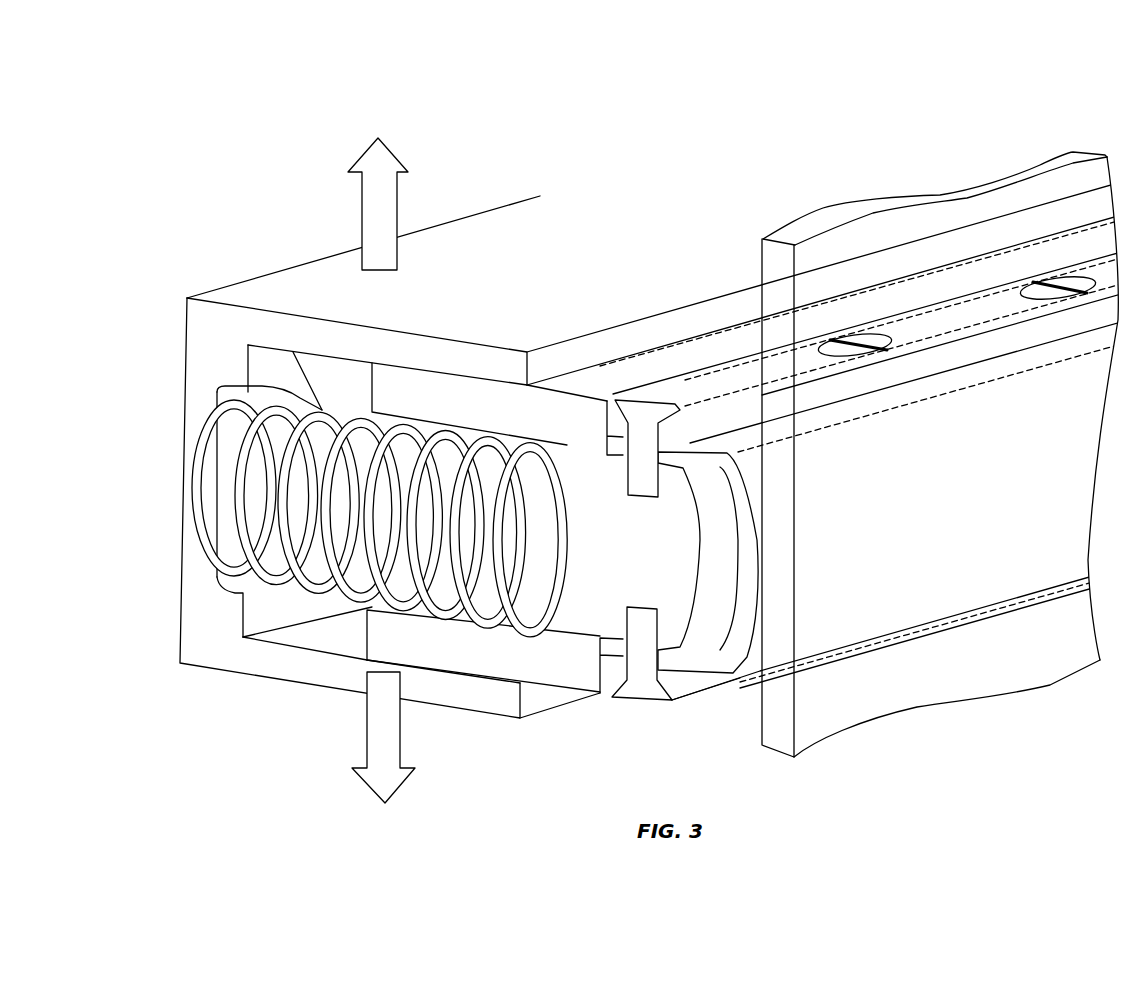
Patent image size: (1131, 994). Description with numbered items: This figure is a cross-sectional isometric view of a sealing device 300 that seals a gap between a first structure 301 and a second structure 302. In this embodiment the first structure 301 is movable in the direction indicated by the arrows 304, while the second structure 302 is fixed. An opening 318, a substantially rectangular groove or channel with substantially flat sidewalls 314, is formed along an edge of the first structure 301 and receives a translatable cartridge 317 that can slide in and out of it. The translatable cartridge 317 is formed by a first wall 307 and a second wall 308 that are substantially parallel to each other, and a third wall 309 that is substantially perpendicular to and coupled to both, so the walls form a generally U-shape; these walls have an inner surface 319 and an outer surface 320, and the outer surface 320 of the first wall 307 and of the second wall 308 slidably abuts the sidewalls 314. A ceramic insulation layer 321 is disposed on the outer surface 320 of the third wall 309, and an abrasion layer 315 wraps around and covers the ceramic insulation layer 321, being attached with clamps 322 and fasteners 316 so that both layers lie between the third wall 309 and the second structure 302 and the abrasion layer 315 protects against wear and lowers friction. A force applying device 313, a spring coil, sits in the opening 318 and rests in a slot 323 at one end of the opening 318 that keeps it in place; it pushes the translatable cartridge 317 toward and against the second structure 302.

The sealing device 300 is at (984, 86).
The first structure 301 is at (316, 276).
The second structure 302 is at (948, 677).
The arrows 304 is at (377, 158).
The first wall 307 is at (455, 395).
The second wall 308 is at (508, 665).
The third wall 309 is at (593, 587).
The force applying device 313 is at (200, 498).
The sidewalls 314 is at (340, 352).
The abrasion layer 315 is at (743, 437).
The fasteners 316 is at (643, 687).
The translatable cartridge 317 is at (592, 382).
The opening 318 is at (287, 633).
The inner surface 319 is at (477, 630).
The outer surface 320 is at (566, 392).
The ceramic insulation layer 321 is at (713, 570).
The clamps 322 is at (683, 702).
The slot 323 is at (228, 397).